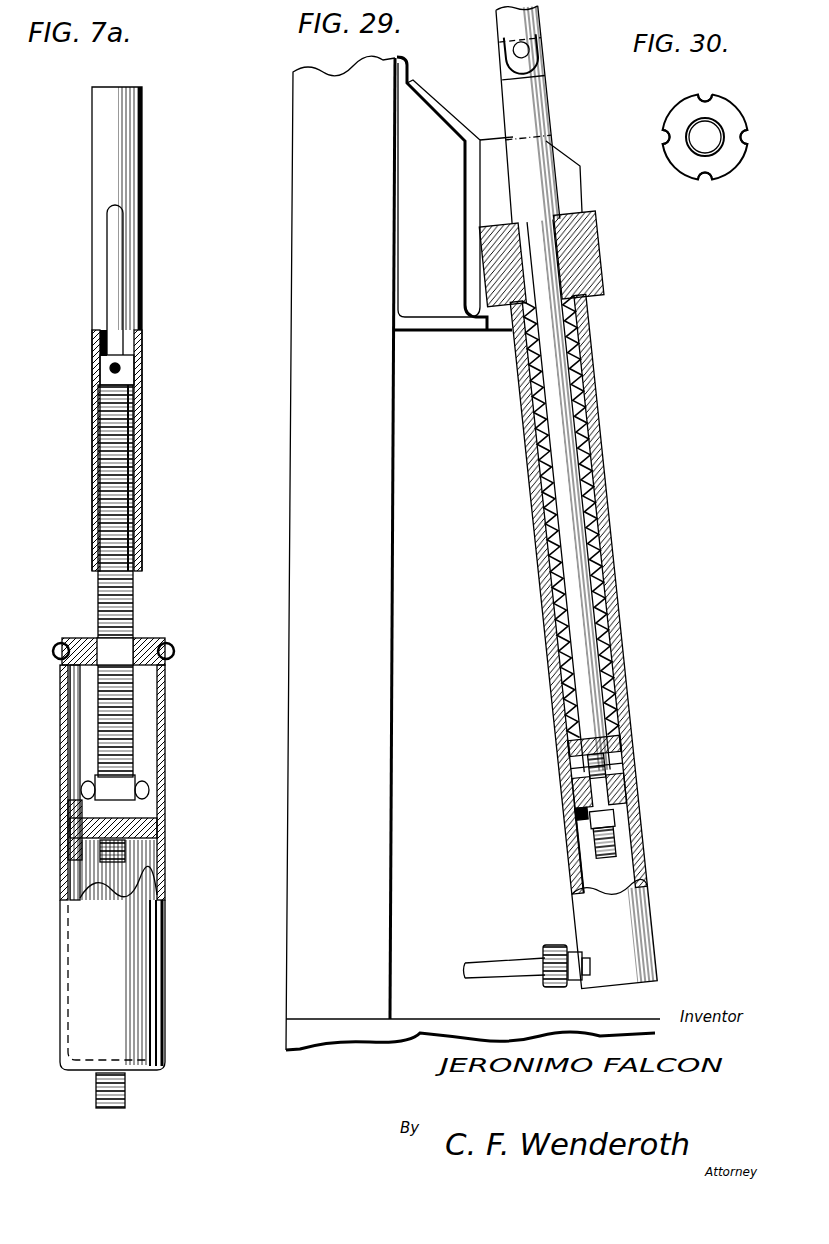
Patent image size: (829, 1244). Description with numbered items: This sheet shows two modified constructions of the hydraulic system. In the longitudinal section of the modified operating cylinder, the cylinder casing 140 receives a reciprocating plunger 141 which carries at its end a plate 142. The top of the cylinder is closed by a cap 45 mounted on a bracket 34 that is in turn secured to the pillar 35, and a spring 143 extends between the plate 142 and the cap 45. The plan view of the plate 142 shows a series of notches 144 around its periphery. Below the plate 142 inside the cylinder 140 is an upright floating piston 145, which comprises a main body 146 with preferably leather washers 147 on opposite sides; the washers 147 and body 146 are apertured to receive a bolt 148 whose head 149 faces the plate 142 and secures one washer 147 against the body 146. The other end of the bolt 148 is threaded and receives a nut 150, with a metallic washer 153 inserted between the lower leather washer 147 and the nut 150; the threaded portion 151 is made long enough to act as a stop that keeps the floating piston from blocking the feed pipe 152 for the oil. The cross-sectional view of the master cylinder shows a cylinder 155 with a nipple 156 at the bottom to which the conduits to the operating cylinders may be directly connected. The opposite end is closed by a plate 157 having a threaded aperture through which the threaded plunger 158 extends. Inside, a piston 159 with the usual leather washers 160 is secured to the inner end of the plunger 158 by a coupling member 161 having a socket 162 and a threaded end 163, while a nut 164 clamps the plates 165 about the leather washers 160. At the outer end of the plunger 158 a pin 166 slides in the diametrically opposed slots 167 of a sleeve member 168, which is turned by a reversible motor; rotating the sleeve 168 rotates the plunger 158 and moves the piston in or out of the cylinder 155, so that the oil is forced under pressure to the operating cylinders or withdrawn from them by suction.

In FIG. 29, the bracket 34 is at (437, 326).
In FIG. 29, the pillar 35 is at (473, 553).
In FIG. 29, the cap 45 is at (602, 240).
In FIG. 29, the cylinder casing 140 is at (598, 452).
In FIG. 29, the plunger 141 is at (560, 388).
In FIG. 29, the plate 142 is at (620, 740).
In FIG. 30, the plate 142 is at (730, 163).
In FIG. 29, the spring 143 is at (585, 332).
In FIG. 29, the notches 144 is at (567, 746).
In FIG. 30, the notches 144 is at (752, 132).
In FIG. 29, the floating piston 145 is at (575, 792).
In FIG. 29, the main body 146 is at (612, 795).
In FIG. 29, the washers 147 is at (575, 816).
In FIG. 29, the bolt 148 is at (620, 780).
In FIG. 29, the head 149 is at (582, 762).
In FIG. 29, the nut 150 is at (604, 822).
In FIG. 29, the threaded portion 151 is at (612, 843).
In FIG. 29, the feed pipe 152 is at (497, 968).
In FIG. 29, the metallic washer 153 is at (577, 838).
In FIG. 7a, the cylinder 155 is at (80, 953).
In FIG. 7a, the nipple 156 is at (128, 1080).
In FIG. 7a, the plate 157 is at (148, 640).
In FIG. 7a, the threaded plunger 158 is at (132, 578).
In FIG. 7a, the piston 159 is at (165, 797).
In FIG. 7a, the leather washers 160 is at (160, 828).
In FIG. 7a, the coupling member 161 is at (72, 897).
In FIG. 7a, the socket 162 is at (150, 780).
In FIG. 7a, the threaded end 163 is at (118, 872).
In FIG. 7a, the nut 164 is at (130, 850).
In FIG. 7a, the plates 165 is at (78, 812).
In FIG. 7a, the pin 166 is at (128, 366).
In FIG. 7a, the slots 167 is at (118, 239).
In FIG. 7a, the sleeve member 168 is at (122, 133).